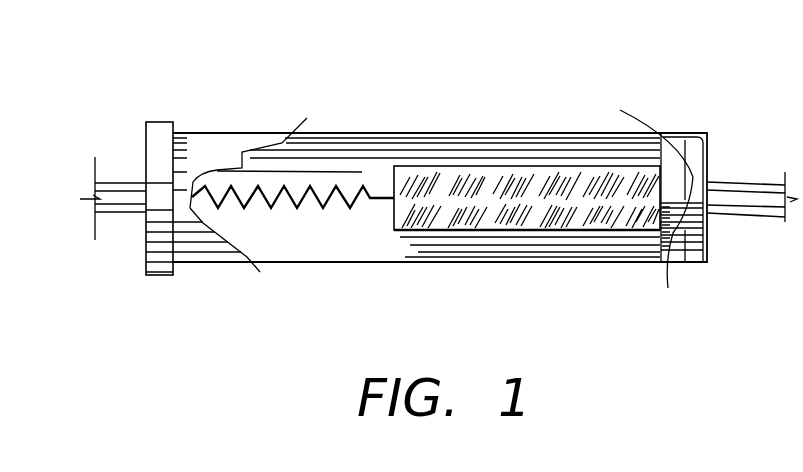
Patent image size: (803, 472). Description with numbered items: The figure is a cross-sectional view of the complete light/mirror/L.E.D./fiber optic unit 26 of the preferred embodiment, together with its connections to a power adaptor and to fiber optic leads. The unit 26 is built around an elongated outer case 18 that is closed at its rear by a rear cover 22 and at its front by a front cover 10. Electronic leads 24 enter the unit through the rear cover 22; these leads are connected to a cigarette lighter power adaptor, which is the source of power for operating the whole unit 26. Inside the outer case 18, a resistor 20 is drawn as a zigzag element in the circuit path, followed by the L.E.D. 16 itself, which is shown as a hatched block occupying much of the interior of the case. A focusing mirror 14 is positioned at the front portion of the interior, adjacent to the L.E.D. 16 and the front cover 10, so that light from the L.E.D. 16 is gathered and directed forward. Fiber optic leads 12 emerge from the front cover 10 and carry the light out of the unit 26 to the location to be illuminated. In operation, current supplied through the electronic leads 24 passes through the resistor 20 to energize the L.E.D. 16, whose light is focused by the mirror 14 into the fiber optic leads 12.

The front cover 10 is at (690, 255).
The fiber optic leads 12 is at (757, 188).
The focusing mirror 14 is at (672, 160).
The L.E.D. 16 is at (533, 190).
The outer case 18 is at (248, 132).
The resistor 20 is at (285, 203).
The rear cover 22 is at (162, 122).
The electronic leads 24 is at (132, 200).
The light/mirror/L.E.D./fiber optic unit 26 is at (394, 125).